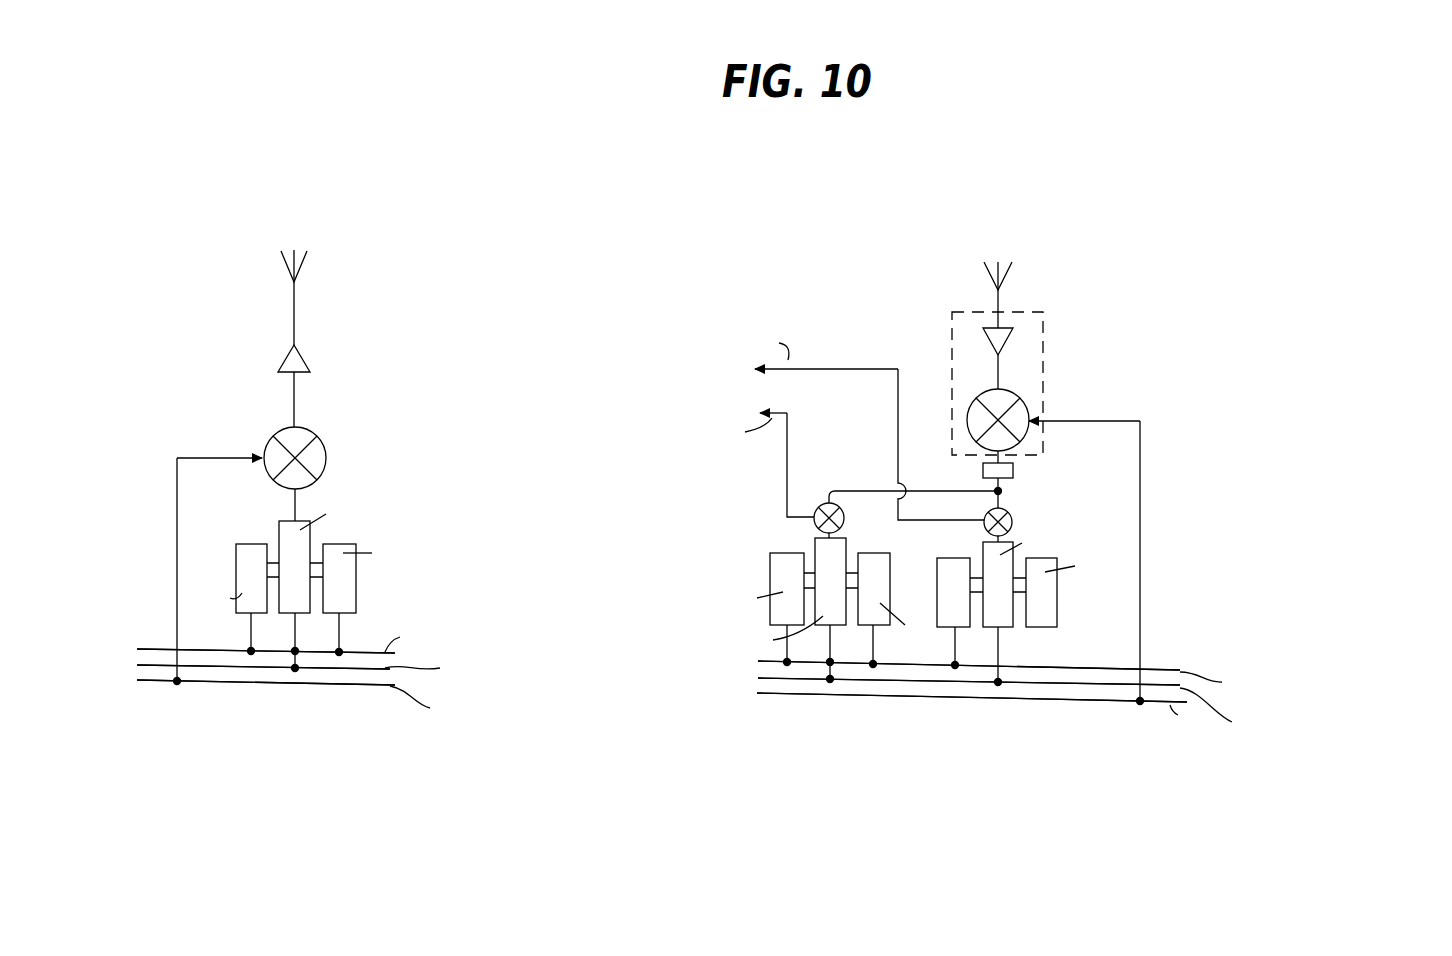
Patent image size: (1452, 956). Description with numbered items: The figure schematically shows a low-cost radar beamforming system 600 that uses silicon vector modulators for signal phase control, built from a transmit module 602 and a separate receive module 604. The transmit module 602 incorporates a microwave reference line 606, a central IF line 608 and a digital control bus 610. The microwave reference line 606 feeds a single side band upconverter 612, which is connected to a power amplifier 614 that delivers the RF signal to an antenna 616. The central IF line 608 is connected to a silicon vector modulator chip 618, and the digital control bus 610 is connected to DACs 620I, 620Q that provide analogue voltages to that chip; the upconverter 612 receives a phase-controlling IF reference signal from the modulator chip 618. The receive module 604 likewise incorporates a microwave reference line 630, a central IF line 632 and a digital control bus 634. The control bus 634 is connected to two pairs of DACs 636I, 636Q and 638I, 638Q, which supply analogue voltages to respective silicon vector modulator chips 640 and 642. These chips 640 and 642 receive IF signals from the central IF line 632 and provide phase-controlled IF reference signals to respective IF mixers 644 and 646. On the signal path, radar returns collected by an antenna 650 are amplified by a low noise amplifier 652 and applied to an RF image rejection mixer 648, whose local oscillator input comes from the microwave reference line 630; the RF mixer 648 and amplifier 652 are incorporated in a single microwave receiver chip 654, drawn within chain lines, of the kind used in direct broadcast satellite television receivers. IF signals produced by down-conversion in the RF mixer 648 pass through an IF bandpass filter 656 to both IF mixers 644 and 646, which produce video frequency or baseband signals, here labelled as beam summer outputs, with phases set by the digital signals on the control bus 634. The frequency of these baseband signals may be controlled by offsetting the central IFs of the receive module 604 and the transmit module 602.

The radar beamforming system 600 is at (458, 352).
The transmit module 602 is at (282, 345).
The receive module 604 is at (1162, 320).
The microwave reference line 606 is at (337, 684).
The central IF line 608 is at (249, 667).
The digital control bus 610 is at (150, 649).
The single side band upconverter 612 is at (280, 432).
The power amplifier 614 is at (305, 360).
The antenna 616 is at (297, 268).
The silicon vector modulator chip 618 is at (278, 530).
The DAC 620Q is at (236, 560).
The DAC 620I is at (350, 593).
The microwave reference line 630 is at (793, 694).
The central IF line 632 is at (758, 679).
The digital control bus 634 is at (1158, 657).
The DAC 636Q is at (770, 578).
The DAC 636I is at (883, 625).
The DAC 638Q is at (937, 560).
The DAC 638I is at (1055, 615).
The silicon vector modulator chip 640 is at (812, 542).
The silicon vector modulator chip 642 is at (1015, 556).
The IF mixer 644 is at (828, 503).
The IF mixer 646 is at (1010, 516).
The RF image rejection mixer 648 is at (1020, 395).
The antenna 650 is at (1008, 278).
The low noise amplifier 652 is at (985, 335).
The microwave receiver chip 654 is at (1045, 318).
The IF bandpass filter 656 is at (1016, 472).